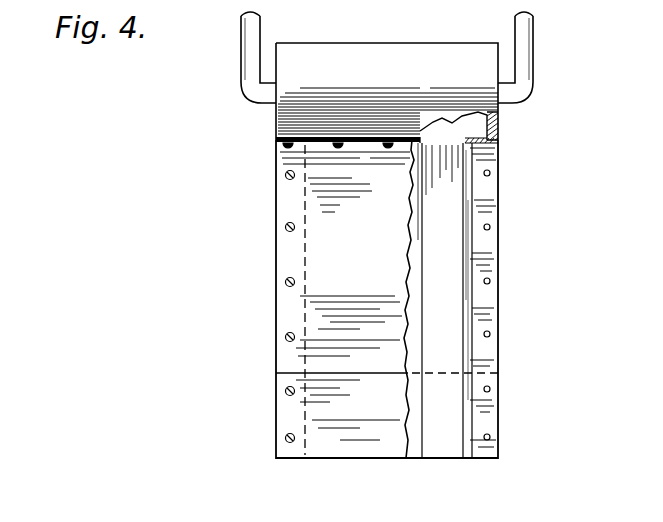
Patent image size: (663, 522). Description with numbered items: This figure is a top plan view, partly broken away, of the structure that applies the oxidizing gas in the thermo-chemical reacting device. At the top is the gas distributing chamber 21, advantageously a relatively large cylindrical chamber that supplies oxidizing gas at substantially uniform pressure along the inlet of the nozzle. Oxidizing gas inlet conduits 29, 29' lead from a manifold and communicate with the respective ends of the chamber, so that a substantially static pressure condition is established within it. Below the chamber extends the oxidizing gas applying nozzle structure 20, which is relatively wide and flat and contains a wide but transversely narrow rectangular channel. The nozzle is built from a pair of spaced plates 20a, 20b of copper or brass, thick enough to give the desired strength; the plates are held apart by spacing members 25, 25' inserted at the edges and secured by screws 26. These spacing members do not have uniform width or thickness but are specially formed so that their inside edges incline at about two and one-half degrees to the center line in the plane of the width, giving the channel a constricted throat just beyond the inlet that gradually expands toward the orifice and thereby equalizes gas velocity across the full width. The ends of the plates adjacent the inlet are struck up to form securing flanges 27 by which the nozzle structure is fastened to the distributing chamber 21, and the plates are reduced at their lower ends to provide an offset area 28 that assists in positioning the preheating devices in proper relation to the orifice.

The oxidizing gas applying nozzle structure 20 is at (384, 268).
The spaced plate 20a is at (366, 446).
The spaced plate 20b is at (442, 448).
The gas distributing chamber 21 is at (376, 56).
The spacing member 25 is at (513, 305).
The spacing member 25' is at (258, 307).
The screws 26 is at (388, 150).
The securing flanges 27 is at (276, 138).
The offset area 28 is at (320, 410).
The oxidizing gas inlet conduit 29 is at (233, 57).
The oxidizing gas inlet conduit 29' is at (538, 57).